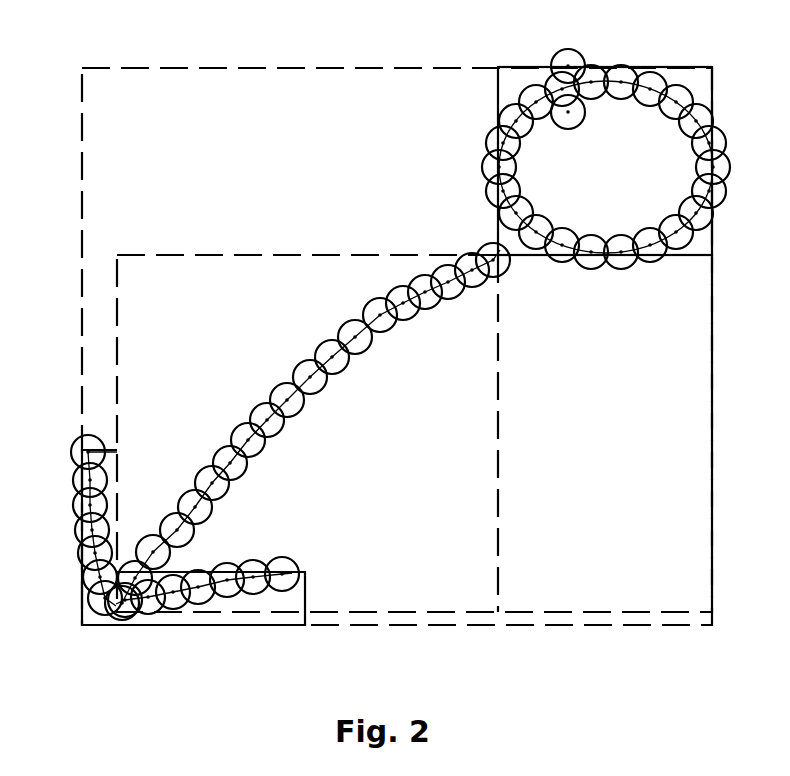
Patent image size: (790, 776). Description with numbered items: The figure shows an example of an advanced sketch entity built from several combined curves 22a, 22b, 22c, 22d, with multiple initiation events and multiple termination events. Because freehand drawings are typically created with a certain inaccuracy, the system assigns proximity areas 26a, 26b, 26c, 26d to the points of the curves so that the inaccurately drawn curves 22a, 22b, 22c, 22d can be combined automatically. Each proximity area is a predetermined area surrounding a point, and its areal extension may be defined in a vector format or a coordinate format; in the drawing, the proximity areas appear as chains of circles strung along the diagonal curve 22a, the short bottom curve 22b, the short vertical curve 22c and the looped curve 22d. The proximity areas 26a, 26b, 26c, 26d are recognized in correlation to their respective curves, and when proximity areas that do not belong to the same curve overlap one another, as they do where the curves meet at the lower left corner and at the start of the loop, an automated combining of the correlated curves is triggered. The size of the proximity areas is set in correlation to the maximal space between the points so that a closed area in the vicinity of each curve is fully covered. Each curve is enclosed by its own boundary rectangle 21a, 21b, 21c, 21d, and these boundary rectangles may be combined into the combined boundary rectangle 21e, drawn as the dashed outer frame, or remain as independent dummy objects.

The boundary rectangle 21a is at (500, 372).
The boundary rectangle 21b is at (300, 600).
The boundary rectangle 21c is at (85, 446).
The boundary rectangle 21d is at (484, 92).
The combined boundary rectangle 21e is at (478, 618).
The curve 22a is at (320, 345).
The curve 22b is at (250, 590).
The curve 22c is at (86, 452).
The curve 22d is at (658, 68).
The proximity area 26a is at (290, 412).
The proximity area 26b is at (150, 610).
The proximity area 26c is at (83, 547).
The proximity area 26d is at (722, 140).